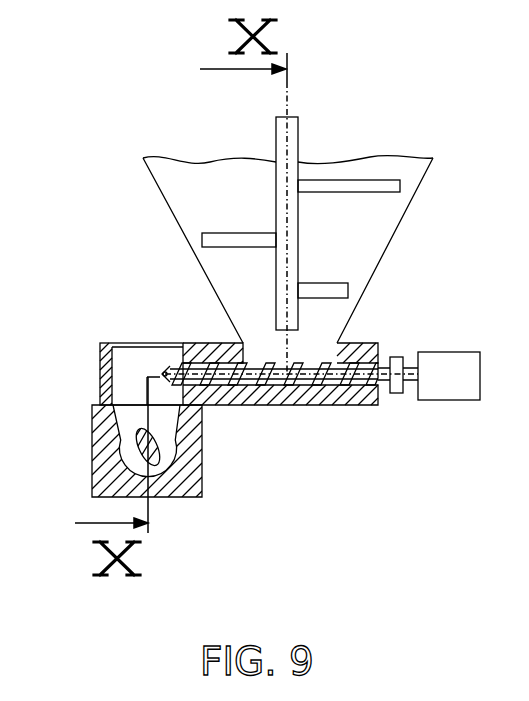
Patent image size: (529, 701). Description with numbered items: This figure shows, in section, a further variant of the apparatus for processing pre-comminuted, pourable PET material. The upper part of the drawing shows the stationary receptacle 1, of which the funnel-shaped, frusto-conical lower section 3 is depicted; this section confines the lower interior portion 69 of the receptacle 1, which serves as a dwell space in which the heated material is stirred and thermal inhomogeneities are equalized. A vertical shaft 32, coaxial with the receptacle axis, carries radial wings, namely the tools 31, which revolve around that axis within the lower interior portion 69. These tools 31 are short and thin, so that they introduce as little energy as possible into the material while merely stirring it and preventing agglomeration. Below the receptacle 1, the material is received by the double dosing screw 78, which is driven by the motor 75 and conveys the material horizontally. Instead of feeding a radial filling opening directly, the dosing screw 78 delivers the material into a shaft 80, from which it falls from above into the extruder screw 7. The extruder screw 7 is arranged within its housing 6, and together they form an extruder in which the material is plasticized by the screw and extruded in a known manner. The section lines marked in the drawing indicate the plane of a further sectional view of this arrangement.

The receptacle 1 is at (430, 190).
The frusto-conical lower section 3 is at (387, 250).
The housing 6 is at (185, 482).
The extruder screw 7 is at (152, 450).
The tools 31 is at (240, 242).
The vertical shaft 32 is at (287, 143).
The lower interior portion 69 is at (365, 247).
The motor 75 is at (448, 360).
The dosing screw 78 is at (345, 405).
The shaft 80 is at (130, 368).